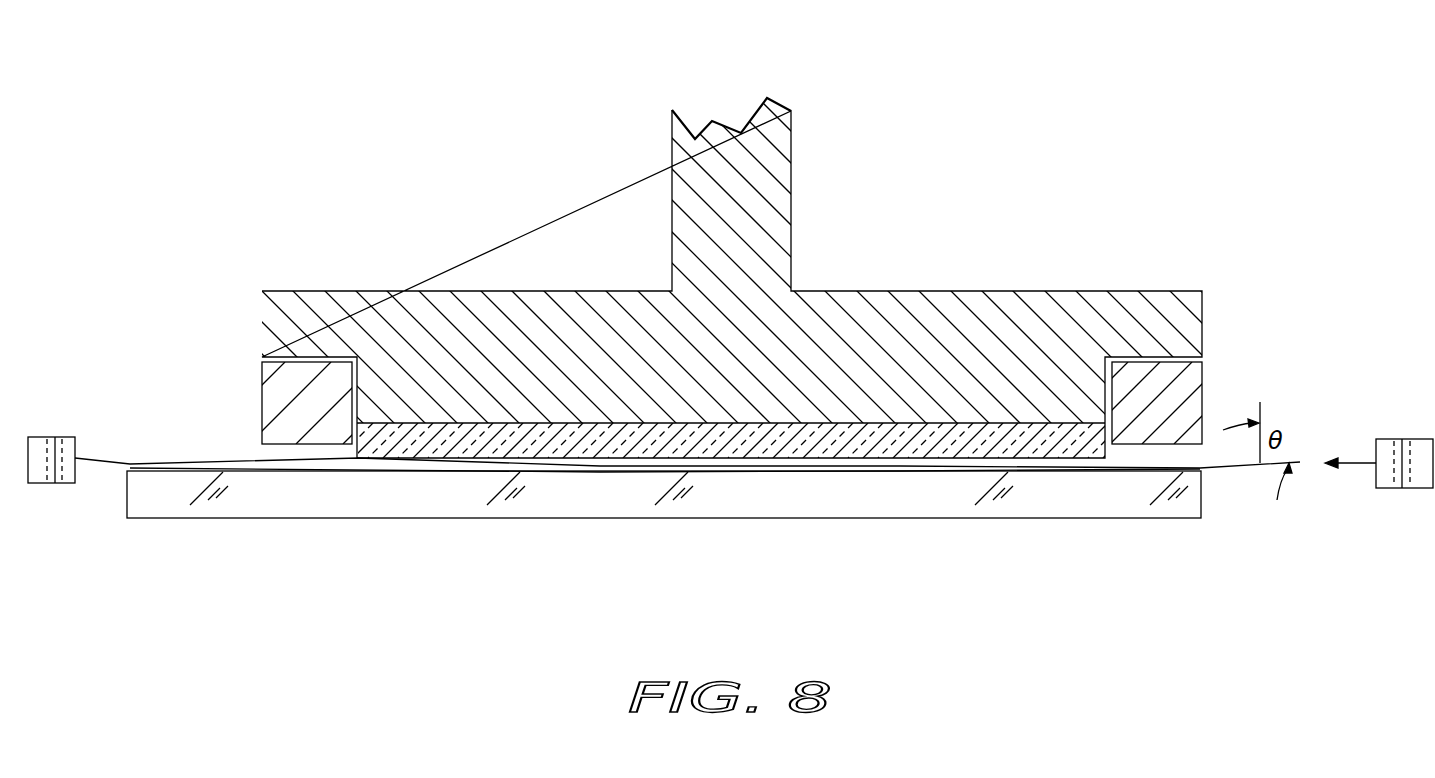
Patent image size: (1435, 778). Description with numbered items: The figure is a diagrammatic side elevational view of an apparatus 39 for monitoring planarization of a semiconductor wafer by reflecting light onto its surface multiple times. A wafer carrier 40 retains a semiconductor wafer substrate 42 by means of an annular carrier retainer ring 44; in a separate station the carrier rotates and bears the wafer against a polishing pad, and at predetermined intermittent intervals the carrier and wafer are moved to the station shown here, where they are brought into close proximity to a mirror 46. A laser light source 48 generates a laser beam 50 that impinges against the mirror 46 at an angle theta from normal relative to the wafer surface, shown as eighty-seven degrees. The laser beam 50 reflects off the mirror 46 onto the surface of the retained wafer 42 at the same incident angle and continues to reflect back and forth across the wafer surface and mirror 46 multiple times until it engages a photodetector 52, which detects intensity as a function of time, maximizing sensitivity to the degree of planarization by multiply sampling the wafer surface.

The apparatus 39 is at (1124, 129).
The wafer carrier 40 is at (977, 330).
The semiconductor wafer substrate 42 is at (433, 443).
The annular carrier retainer ring 44 is at (305, 402).
The mirror 46 is at (845, 498).
The laser light source 48 is at (1422, 458).
The laser beam 50 is at (1228, 466).
The photodetector 52 is at (40, 450).